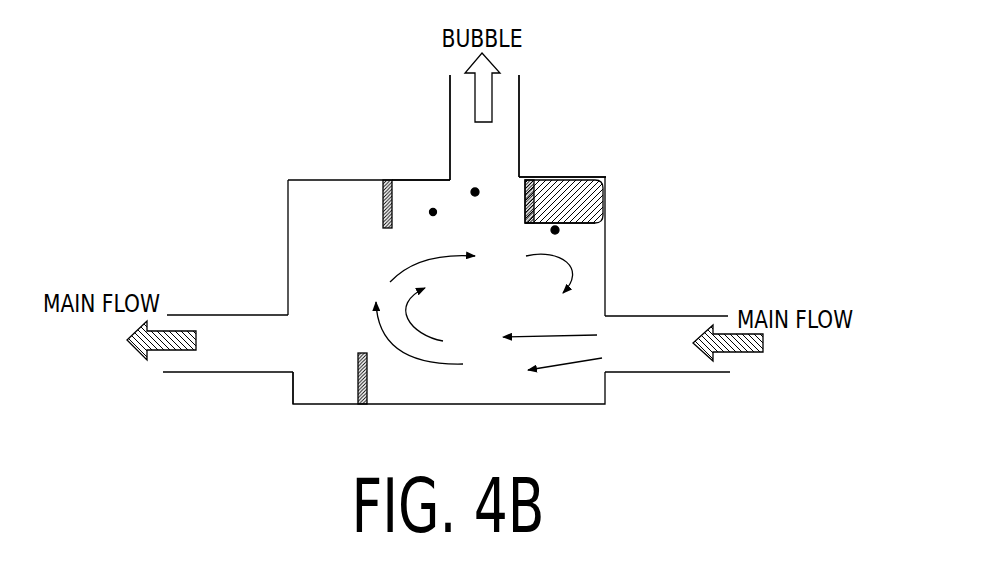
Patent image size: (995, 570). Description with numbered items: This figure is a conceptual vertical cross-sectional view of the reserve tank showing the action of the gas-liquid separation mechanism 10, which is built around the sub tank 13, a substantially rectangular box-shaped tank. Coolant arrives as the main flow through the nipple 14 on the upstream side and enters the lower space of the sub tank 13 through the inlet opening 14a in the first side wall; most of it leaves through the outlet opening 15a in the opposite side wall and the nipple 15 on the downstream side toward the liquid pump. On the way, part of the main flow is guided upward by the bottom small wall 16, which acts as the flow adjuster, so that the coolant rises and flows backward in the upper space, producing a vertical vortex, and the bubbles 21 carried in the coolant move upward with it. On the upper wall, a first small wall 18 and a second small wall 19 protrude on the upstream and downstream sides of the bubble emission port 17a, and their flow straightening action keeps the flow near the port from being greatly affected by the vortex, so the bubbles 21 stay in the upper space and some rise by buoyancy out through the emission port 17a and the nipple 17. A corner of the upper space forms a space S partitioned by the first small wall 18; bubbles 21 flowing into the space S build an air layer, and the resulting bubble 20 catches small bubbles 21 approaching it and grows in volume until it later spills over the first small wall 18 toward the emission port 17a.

The gas-liquid separation mechanism 10 is at (688, 162).
The sub tank 13 is at (580, 170).
The nipple 14 is at (684, 316).
The inlet opening 14a is at (605, 327).
The nipple 15 is at (246, 315).
The outlet opening 15a is at (288, 345).
The bottom small wall 16 is at (367, 376).
The nipple 17 is at (519, 117).
The bubble emission port 17a is at (466, 180).
The first small wall 18 is at (525, 217).
The second small wall 19 is at (392, 223).
The bubble 20 is at (582, 224).
The bubbles 21 is at (477, 190).
The space S is at (604, 176).